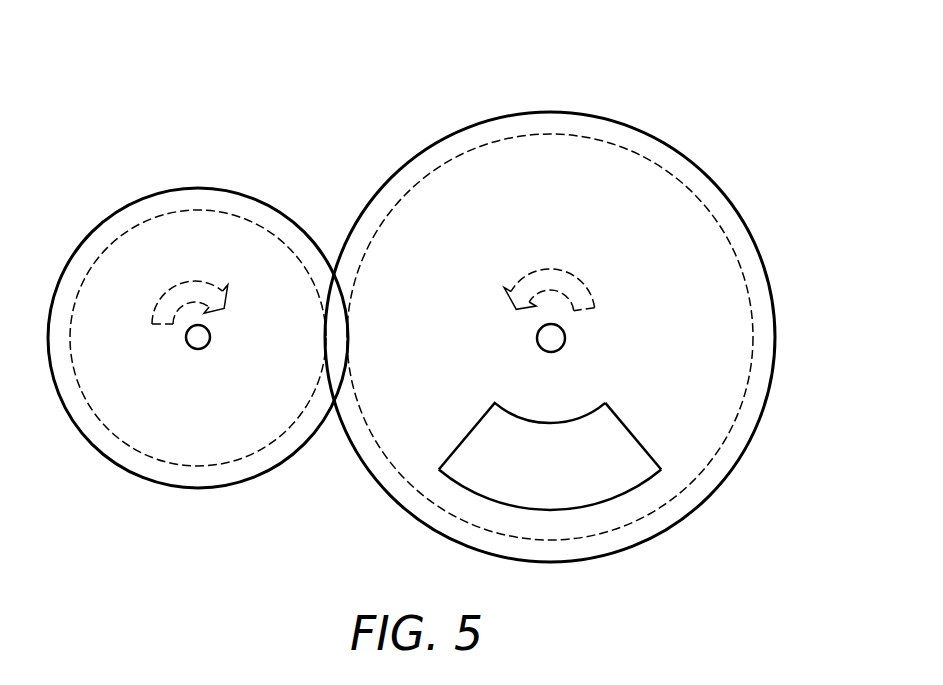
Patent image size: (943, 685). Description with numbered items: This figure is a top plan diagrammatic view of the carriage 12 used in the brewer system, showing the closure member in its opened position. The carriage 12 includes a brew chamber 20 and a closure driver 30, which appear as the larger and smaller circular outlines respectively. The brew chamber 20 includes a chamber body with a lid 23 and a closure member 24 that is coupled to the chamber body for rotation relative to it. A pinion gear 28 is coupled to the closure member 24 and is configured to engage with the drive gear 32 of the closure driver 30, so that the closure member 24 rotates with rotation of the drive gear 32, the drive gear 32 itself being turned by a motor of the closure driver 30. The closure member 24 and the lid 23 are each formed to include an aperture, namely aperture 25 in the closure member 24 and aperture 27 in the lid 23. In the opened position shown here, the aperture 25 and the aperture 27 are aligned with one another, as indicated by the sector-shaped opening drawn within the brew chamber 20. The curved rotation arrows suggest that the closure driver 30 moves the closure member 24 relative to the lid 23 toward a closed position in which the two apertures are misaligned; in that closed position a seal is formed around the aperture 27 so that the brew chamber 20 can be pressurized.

The carriage 12 is at (323, 124).
The brew chamber 20 is at (741, 135).
The lid 23 is at (698, 230).
The closure member 24 is at (722, 287).
The aperture 25 is at (530, 514).
The aperture 27 is at (592, 512).
The pinion gear 28 is at (458, 213).
The closure driver 30 is at (51, 195).
The drive gear 32 is at (198, 240).